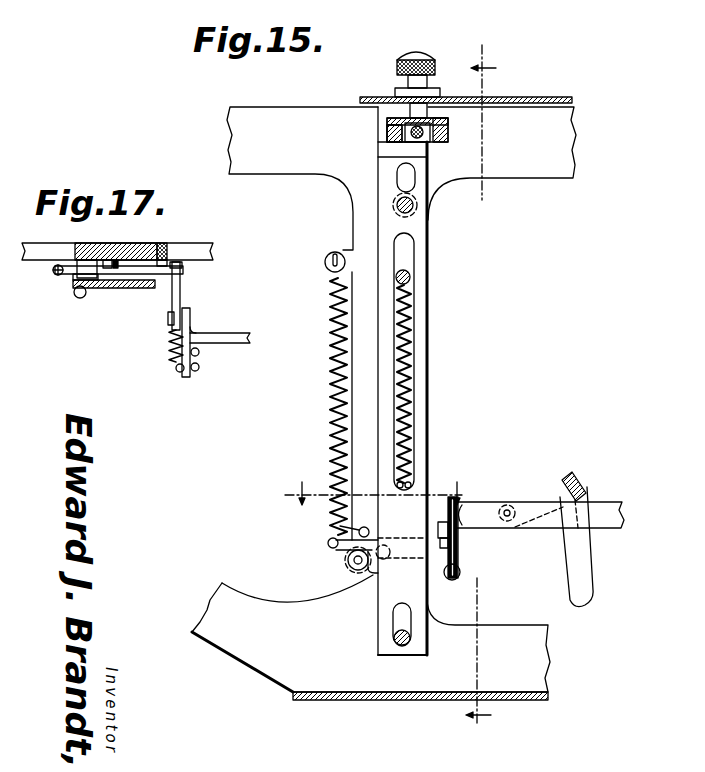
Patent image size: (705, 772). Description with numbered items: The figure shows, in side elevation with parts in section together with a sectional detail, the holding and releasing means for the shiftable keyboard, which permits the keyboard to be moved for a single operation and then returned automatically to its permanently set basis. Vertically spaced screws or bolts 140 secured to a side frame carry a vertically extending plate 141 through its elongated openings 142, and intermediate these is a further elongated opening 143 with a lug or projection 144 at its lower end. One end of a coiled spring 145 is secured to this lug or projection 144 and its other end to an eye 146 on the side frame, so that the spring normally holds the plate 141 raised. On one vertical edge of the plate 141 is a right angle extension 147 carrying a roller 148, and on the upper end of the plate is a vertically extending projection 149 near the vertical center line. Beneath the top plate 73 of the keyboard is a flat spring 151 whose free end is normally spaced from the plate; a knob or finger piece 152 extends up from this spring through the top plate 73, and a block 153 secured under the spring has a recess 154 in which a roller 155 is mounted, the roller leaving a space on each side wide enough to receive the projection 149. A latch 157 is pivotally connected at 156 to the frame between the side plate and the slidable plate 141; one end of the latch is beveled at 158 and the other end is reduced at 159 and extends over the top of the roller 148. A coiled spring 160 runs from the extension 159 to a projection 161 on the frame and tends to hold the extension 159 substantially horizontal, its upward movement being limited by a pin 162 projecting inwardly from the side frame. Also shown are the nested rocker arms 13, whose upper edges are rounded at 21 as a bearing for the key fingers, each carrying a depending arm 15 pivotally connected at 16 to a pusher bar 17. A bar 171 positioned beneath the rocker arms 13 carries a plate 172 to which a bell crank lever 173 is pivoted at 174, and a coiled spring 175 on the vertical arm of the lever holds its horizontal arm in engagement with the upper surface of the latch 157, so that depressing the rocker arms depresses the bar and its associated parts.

In FIG. 15, the rocker arm 13 is at (497, 502).
In FIG. 15, the depending arm 15 is at (580, 580).
In FIG. 15, the pivotal connection 16 is at (481, 384).
In FIG. 15, the pusher bar 17 is at (369, 478).
In FIG. 15, the rounded upper edge 21 is at (577, 475).
In FIG. 15, the top plate 73 is at (530, 98).
In FIG. 15, the screws or bolts 140 is at (410, 205).
In FIG. 15, the vertically extending plate 141 is at (428, 410).
In FIG. 17, the vertically extending plate 141 is at (118, 288).
In FIG. 15, the elongated openings 142 is at (408, 180).
In FIG. 15, the elongated opening 143 is at (407, 258).
In FIG. 15, the lug or projection 144 is at (410, 480).
In FIG. 15, the coiled spring 145 is at (410, 358).
In FIG. 15, the eye 146 is at (410, 277).
In FIG. 15, the right angle extension 147 is at (366, 571).
In FIG. 17, the right angle extension 147 is at (78, 298).
In FIG. 15, the roller 148 is at (352, 568).
In FIG. 17, the roller 148 is at (70, 285).
In FIG. 15, the vertically extending projection 149 is at (387, 135).
In FIG. 15, the flat spring 151 is at (437, 118).
In FIG. 15, the knob or finger piece 152 is at (417, 53).
In FIG. 15, the block 153 is at (448, 130).
In FIG. 15, the recess 154 is at (432, 140).
In FIG. 15, the roller 155 is at (395, 125).
In FIG. 15, the pivotal connection 156 is at (385, 558).
In FIG. 17, the pivotal connection 156 is at (112, 260).
In FIG. 15, the latch 157 is at (455, 545).
In FIG. 17, the latch 157 is at (160, 262).
In FIG. 17, the beveled end 158 is at (185, 270).
In FIG. 15, the reduced extension 159 is at (345, 548).
In FIG. 15, the coiled spring 160 is at (332, 385).
In FIG. 17, the coiled spring 160 is at (52, 271).
In FIG. 15, the projection 161 is at (328, 262).
In FIG. 15, the pin 162 is at (340, 526).
In FIG. 17, the pin 162 is at (85, 260).
In FIG. 15, the bar 171 is at (610, 510).
In FIG. 17, the bar 171 is at (232, 338).
In FIG. 15, the plate 172 is at (458, 502).
In FIG. 17, the plate 172 is at (191, 325).
In FIG. 15, the bell crank lever 173 is at (447, 515).
In FIG. 17, the bell crank lever 173 is at (182, 298).
In FIG. 17, the pivotal connection 174 is at (168, 318).
In FIG. 15, the coiled spring 175 is at (460, 578).
In FIG. 17, the coiled spring 175 is at (170, 352).